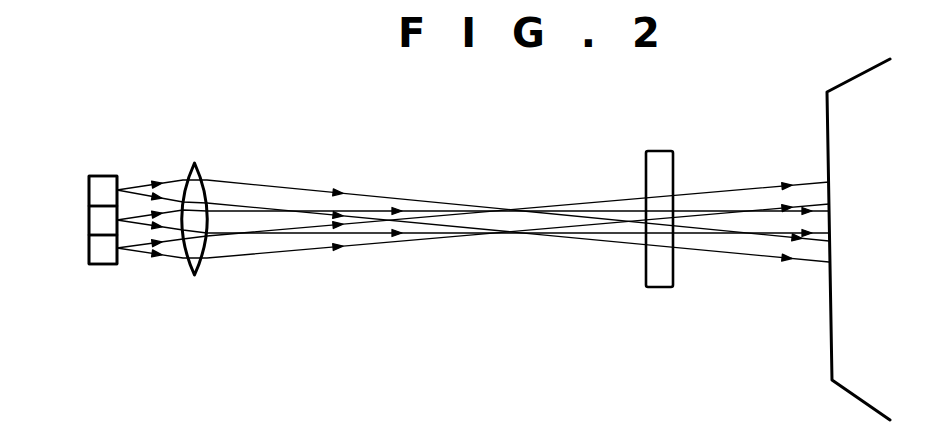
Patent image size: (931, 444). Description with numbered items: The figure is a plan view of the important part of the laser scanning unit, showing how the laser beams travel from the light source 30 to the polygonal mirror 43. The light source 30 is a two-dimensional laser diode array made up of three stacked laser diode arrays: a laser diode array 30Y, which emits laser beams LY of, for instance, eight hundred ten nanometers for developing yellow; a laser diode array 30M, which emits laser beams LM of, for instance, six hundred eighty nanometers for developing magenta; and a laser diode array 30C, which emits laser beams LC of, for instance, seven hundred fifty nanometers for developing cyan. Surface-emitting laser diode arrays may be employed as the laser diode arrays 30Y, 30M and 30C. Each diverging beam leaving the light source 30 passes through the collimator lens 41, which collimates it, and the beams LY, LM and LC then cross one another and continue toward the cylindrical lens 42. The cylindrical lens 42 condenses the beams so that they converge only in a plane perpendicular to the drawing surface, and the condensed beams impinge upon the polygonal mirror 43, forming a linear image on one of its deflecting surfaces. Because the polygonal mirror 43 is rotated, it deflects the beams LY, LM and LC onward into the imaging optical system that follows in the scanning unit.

The light source 30 is at (113, 164).
The laser diode array 30Y is at (90, 187).
The laser diode array 30M is at (95, 218).
The laser diode array 30C is at (98, 248).
The collimator lens 41 is at (199, 172).
The laser beams LY is at (262, 185).
The laser beams LM is at (370, 211).
The laser beams LC is at (291, 253).
The cylindrical lens 42 is at (670, 150).
The polygonal mirror 43 is at (848, 80).